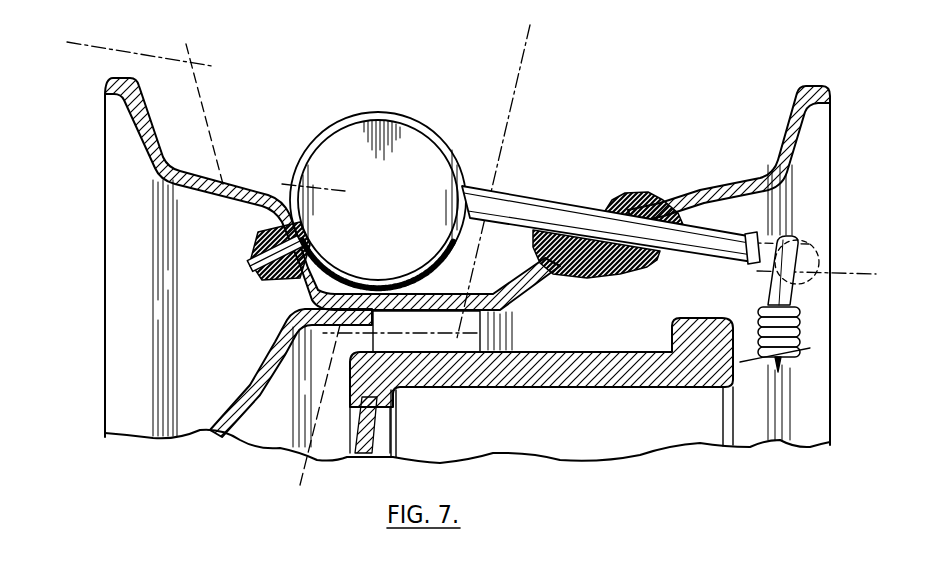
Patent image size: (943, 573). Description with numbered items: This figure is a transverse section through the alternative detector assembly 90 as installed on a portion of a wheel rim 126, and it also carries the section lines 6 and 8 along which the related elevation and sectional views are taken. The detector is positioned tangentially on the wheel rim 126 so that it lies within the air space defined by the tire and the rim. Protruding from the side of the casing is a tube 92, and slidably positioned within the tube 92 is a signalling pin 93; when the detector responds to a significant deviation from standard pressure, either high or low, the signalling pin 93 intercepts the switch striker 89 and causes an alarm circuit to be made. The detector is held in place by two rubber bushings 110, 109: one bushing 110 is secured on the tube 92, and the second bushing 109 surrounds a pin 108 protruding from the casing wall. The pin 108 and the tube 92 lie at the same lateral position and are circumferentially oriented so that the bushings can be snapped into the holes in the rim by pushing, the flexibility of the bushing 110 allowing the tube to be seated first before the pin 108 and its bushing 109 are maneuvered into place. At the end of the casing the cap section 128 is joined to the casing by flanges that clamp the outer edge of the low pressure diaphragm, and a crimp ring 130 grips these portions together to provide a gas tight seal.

The section line 6— 6 is at (537, 58).
The section line 8— 8 is at (83, 18).
The switch striker 89 is at (790, 240).
The detector assembly 90 is at (467, 270).
The tube 92 is at (560, 217).
The signalling pin 93 is at (747, 267).
The pin 108 is at (253, 270).
The rubber bushing 109 is at (270, 273).
The rubber bushing 110 is at (602, 263).
The wheel rim 126 is at (785, 150).
The cap section 128 is at (389, 231).
The crimp ring 130 is at (347, 117).